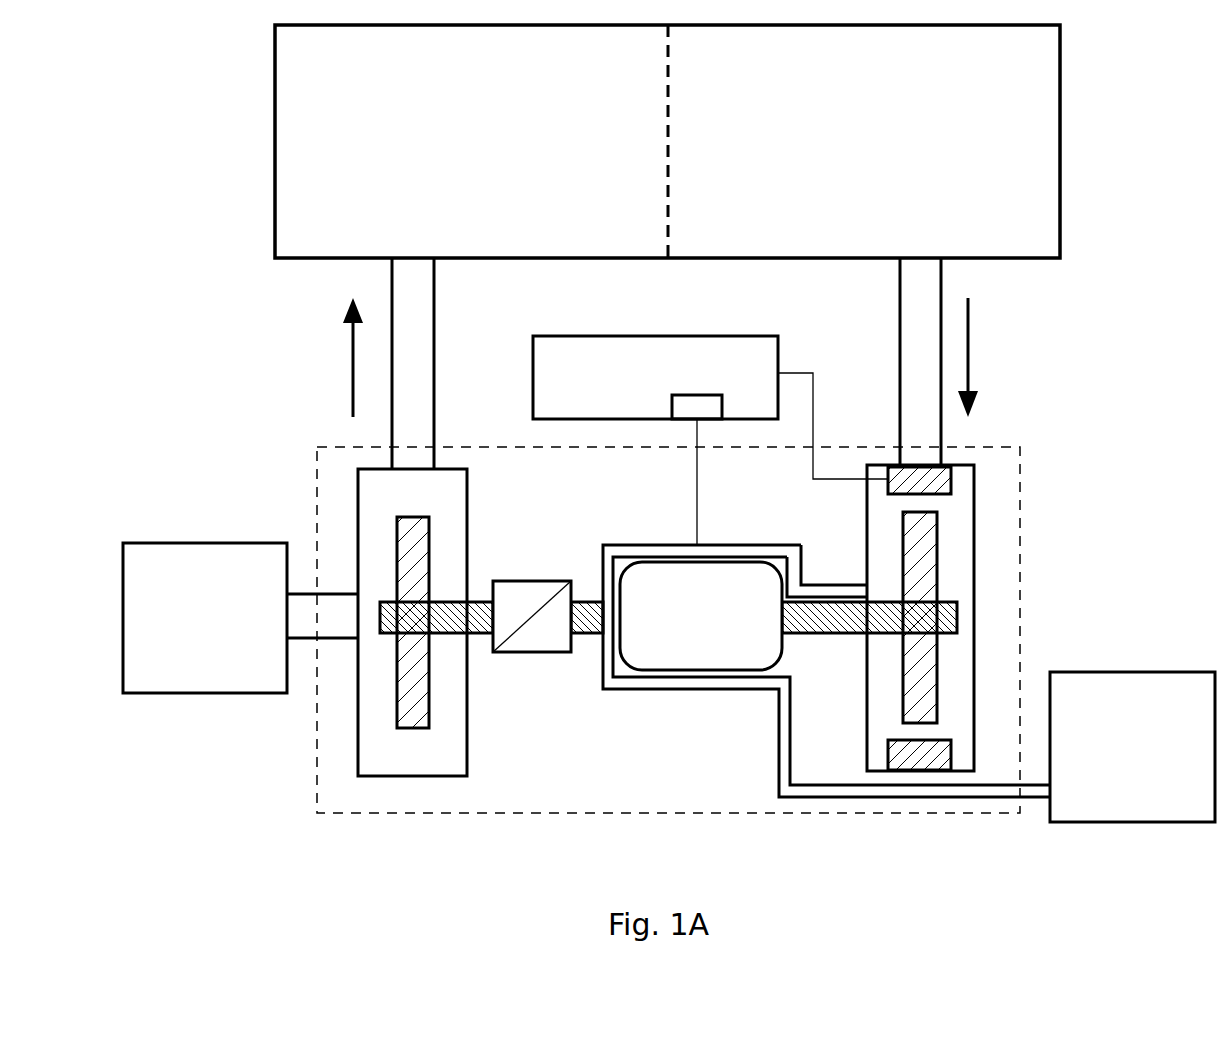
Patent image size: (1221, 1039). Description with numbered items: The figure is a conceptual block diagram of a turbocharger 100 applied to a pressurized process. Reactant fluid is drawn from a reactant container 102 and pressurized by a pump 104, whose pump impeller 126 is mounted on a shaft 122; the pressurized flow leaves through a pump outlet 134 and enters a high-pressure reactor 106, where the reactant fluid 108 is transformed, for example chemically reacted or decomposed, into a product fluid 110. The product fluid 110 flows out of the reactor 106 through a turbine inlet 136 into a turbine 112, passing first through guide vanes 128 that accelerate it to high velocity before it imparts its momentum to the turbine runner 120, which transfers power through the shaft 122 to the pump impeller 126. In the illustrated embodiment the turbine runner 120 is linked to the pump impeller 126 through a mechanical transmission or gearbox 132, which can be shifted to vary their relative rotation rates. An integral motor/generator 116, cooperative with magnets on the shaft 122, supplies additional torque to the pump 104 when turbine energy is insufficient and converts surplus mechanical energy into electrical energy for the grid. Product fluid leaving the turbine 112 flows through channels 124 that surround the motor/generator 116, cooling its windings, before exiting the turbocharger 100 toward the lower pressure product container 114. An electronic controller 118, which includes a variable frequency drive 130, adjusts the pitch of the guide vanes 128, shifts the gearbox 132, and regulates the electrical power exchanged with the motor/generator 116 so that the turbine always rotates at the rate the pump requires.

The turbocharger 100 is at (1020, 632).
The reactant container 102 is at (211, 620).
The pump 104 is at (467, 486).
The high-pressure reactor 106 is at (263, 127).
The reactant fluid 108 is at (490, 153).
The product fluid 110 is at (898, 144).
The turbine 112 is at (974, 512).
The product container 114 is at (1143, 750).
The motor/generator 116 is at (711, 623).
The controller 118 is at (608, 375).
The turbine runner 120 is at (937, 573).
The shaft 122 is at (833, 636).
The channels 124 is at (779, 762).
The pump impeller 126 is at (430, 542).
The guide vanes 128 is at (974, 470).
The variable frequency drive 130 is at (684, 395).
The gearbox 132 is at (540, 652).
The pump outlet 134 is at (434, 300).
The turbine inlet 136 is at (900, 278).